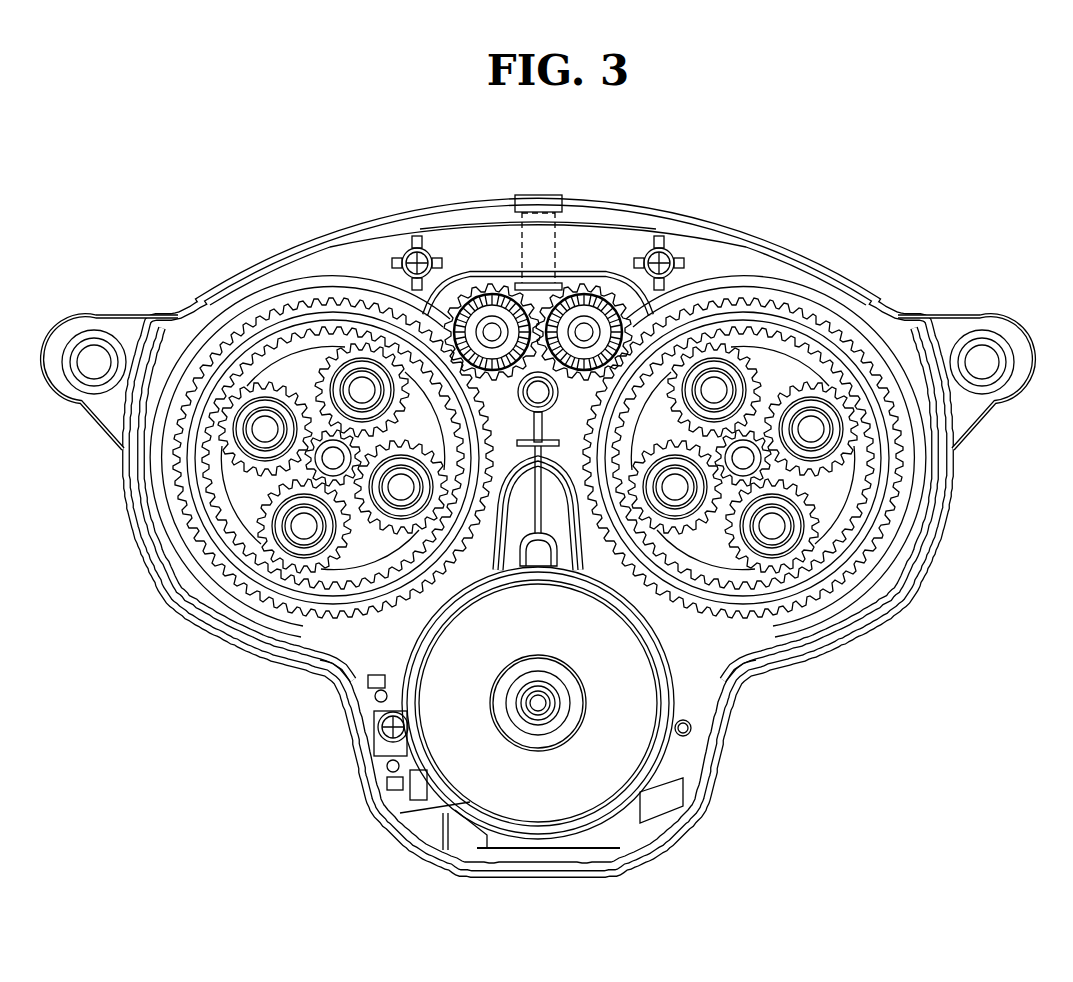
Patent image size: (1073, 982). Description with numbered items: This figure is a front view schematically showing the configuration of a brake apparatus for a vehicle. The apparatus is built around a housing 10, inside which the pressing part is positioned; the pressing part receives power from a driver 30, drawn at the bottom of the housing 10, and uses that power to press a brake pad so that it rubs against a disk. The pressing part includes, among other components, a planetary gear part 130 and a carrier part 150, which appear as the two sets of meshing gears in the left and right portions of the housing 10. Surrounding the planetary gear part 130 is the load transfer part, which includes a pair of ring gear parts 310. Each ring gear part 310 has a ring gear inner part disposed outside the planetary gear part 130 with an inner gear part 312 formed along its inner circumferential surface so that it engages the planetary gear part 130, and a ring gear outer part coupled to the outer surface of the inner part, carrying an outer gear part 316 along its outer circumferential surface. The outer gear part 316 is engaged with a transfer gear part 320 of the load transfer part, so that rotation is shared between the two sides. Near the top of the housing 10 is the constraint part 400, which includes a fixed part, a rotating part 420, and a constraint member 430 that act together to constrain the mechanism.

The housing 10 is at (838, 632).
The driver 30 is at (563, 720).
The planetary gear part 130 is at (250, 443).
The carrier part 150 is at (833, 497).
The ring gear part 310 is at (277, 323).
The inner gear part 312 is at (825, 358).
The outer gear part 316 is at (907, 453).
The transfer gear part 320 is at (628, 318).
The constraint part 400 is at (598, 212).
The rotating part 420 is at (562, 207).
The constraint member 430 is at (553, 283).